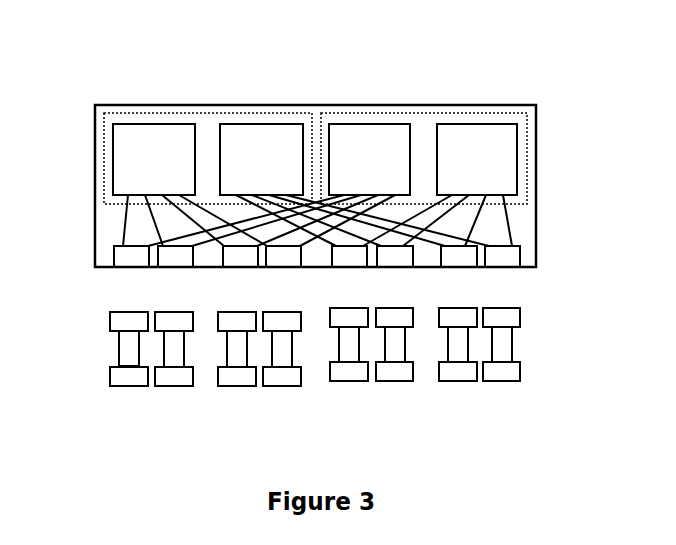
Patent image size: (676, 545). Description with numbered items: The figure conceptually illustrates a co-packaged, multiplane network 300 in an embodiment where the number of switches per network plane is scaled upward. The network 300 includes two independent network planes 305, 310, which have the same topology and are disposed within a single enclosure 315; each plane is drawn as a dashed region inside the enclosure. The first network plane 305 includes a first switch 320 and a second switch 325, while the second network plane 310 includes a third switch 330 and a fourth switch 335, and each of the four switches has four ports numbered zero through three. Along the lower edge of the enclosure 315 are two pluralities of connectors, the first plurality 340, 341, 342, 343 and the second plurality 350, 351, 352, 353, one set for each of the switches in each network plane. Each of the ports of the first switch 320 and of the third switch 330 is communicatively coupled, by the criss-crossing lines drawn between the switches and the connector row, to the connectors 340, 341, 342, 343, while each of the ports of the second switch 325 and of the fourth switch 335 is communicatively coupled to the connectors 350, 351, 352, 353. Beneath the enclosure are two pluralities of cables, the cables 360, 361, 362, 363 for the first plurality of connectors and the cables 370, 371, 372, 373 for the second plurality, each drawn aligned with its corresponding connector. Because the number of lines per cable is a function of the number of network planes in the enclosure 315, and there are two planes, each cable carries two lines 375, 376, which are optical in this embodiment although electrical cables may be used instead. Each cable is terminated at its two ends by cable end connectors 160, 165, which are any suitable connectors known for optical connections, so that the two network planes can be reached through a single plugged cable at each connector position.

The co-packaged multiplane network 300 is at (123, 56).
The enclosure 315 is at (95, 104).
The network plane 305 is at (104, 163).
The network plane 310 is at (527, 157).
The first switch 320 is at (137, 153).
The second switch 325 is at (244, 153).
The third switch 330 is at (352, 153).
The fourth switch 335 is at (460, 153).
The connector 340 is at (114, 246).
The connector 341 is at (175, 267).
The connector 342 is at (238, 267).
The connector 343 is at (283, 267).
The connector 350 is at (348, 267).
The connector 351 is at (395, 267).
The connector 352 is at (458, 267).
The connector 353 is at (520, 246).
The cable end connector 160 is at (110, 312).
The cable end connector 165 is at (110, 380).
The line 375 is at (118, 342).
The line 376 is at (130, 364).
The cable 360 is at (96, 354).
The cable 361 is at (172, 421).
The cable 362 is at (239, 398).
The cable 363 is at (284, 414).
The cable 370 is at (348, 414).
The cable 371 is at (394, 396).
The cable 372 is at (459, 413).
The cable 373 is at (521, 393).